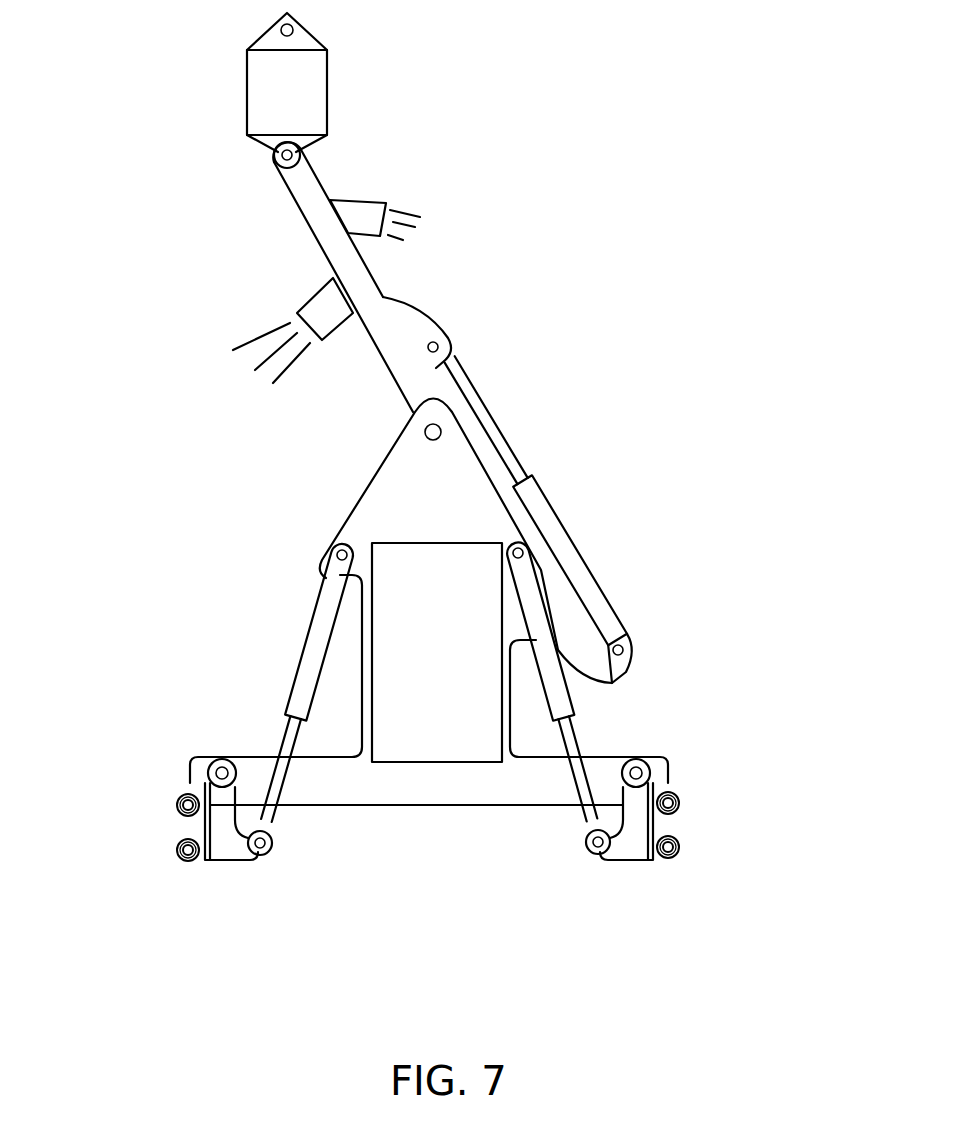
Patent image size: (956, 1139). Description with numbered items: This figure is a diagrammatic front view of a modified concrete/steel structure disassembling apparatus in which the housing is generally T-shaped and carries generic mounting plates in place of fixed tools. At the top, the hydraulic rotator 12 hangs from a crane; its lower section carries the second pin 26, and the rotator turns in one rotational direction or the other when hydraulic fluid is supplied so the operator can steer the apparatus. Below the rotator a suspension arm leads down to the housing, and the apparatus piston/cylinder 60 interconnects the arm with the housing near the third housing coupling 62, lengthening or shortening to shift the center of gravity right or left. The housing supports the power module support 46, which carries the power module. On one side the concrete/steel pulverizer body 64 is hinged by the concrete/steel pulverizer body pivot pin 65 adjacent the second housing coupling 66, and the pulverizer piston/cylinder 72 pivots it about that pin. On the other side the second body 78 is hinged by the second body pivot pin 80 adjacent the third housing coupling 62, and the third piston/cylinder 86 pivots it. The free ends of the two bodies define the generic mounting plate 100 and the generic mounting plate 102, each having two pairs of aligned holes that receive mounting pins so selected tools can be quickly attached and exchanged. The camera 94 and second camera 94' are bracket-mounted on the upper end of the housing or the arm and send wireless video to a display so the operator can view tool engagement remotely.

The hydraulic rotator 12 is at (328, 80).
The second pin 26 is at (273, 158).
The power module support 46 is at (421, 745).
The apparatus piston/cylinder 60 is at (560, 530).
The third housing coupling 62 is at (676, 755).
The concrete/steel pulverizer body 64 is at (236, 866).
The concrete/steel pulverizer body pivot pin 65 is at (217, 760).
The second housing coupling 66 is at (182, 763).
The pulverizer piston/cylinder 72 is at (308, 615).
The second body 78 is at (614, 865).
The second body pivot pin 80 is at (638, 760).
The third piston/cylinder 86 is at (548, 606).
The camera 94 is at (286, 318).
The second camera 94' is at (411, 187).
The generic mounting plate 100 is at (193, 825).
The generic mounting plate 102 is at (680, 838).